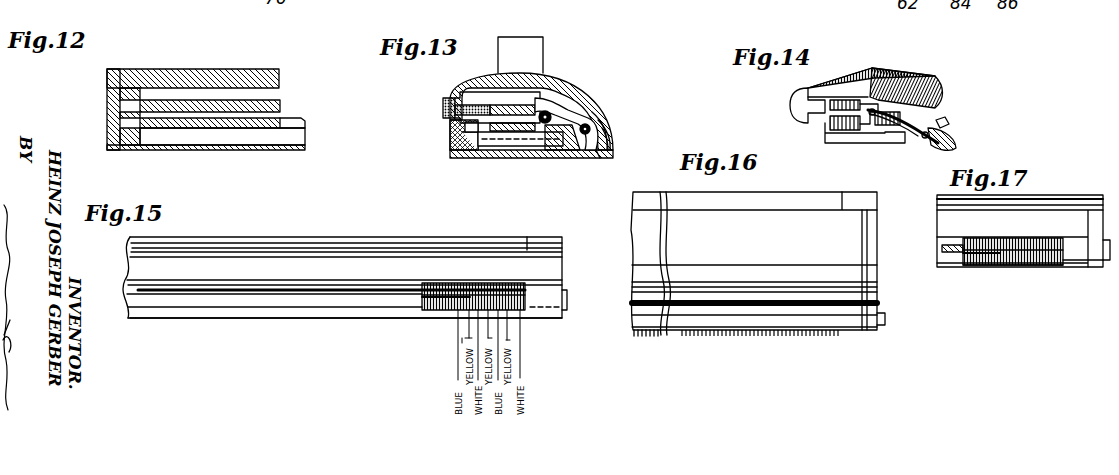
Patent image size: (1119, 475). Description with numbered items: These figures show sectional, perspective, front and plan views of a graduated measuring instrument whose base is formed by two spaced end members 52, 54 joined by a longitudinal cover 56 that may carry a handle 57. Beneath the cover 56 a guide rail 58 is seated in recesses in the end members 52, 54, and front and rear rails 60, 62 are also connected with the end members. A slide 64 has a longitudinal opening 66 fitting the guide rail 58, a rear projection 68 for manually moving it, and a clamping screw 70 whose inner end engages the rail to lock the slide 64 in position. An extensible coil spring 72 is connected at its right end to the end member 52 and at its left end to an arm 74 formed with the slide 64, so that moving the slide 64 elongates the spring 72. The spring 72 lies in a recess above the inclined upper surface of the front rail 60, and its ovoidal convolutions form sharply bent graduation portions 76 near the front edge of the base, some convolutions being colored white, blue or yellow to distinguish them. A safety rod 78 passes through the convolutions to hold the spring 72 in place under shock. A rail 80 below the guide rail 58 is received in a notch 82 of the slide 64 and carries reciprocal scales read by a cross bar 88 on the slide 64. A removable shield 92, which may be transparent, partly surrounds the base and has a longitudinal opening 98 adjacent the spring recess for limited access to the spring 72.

In FIG. 15, the end member 52 is at (565, 252).
In FIG. 16, the end member 52 is at (873, 238).
In FIG. 12, the end member 54 is at (108, 96).
In FIG. 12, the cover 56 is at (199, 75).
In FIG. 13, the cover 56 is at (547, 100).
In FIG. 15, the cover 56 is at (388, 247).
In FIG. 16, the cover 56 is at (769, 217).
In FIG. 17, the cover 56 is at (1064, 196).
In FIG. 13, the handle 57 is at (544, 53).
In FIG. 12, the guide rail 58 is at (281, 107).
In FIG. 13, the guide rail 58 is at (497, 105).
In FIG. 13, the front rail 60 is at (590, 156).
In FIG. 12, the rear rail 62 is at (307, 123).
In FIG. 13, the rear rail 62 is at (473, 150).
In FIG. 13, the slide 64 is at (576, 101).
In FIG. 14, the slide 64 is at (893, 78).
In FIG. 14, the longitudinal opening 66 is at (858, 112).
In FIG. 13, the projection 68 is at (460, 98).
In FIG. 14, the projection 68 is at (800, 103).
In FIG. 13, the clamping screw 70 is at (443, 112).
In FIG. 13, the extensible spring 72 is at (612, 141).
In FIG. 14, the extensible spring 72 is at (953, 141).
In FIG. 15, the extensible spring 72 is at (480, 287).
In FIG. 17, the extensible spring 72 is at (985, 266).
In FIG. 13, the arm 74 is at (593, 131).
In FIG. 14, the arm 74 is at (916, 118).
In FIG. 15, the arm 74 is at (423, 297).
In FIG. 17, the arm 74 is at (963, 253).
In FIG. 13, the graduation portions 76 is at (608, 152).
In FIG. 16, the graduation portions 76 is at (756, 341).
In FIG. 17, the graduation portions 76 is at (1030, 268).
In FIG. 13, the longitudinal rod 78 is at (606, 119).
In FIG. 14, the longitudinal rod 78 is at (946, 121).
In FIG. 15, the longitudinal rod 78 is at (276, 290).
In FIG. 17, the longitudinal rod 78 is at (951, 247).
In FIG. 12, the rail 80 is at (249, 130).
In FIG. 13, the rail 80 is at (515, 147).
In FIG. 14, the rail 80 is at (827, 140).
In FIG. 14, the notch 82 is at (863, 131).
In FIG. 13, the cross bar 88 is at (550, 146).
In FIG. 12, the shield 92 is at (148, 150).
In FIG. 13, the shield 92 is at (452, 146).
In FIG. 15, the shield 92 is at (251, 313).
In FIG. 13, the longitudinal opening 98 is at (614, 148).
In FIG. 15, the longitudinal opening 98 is at (194, 304).